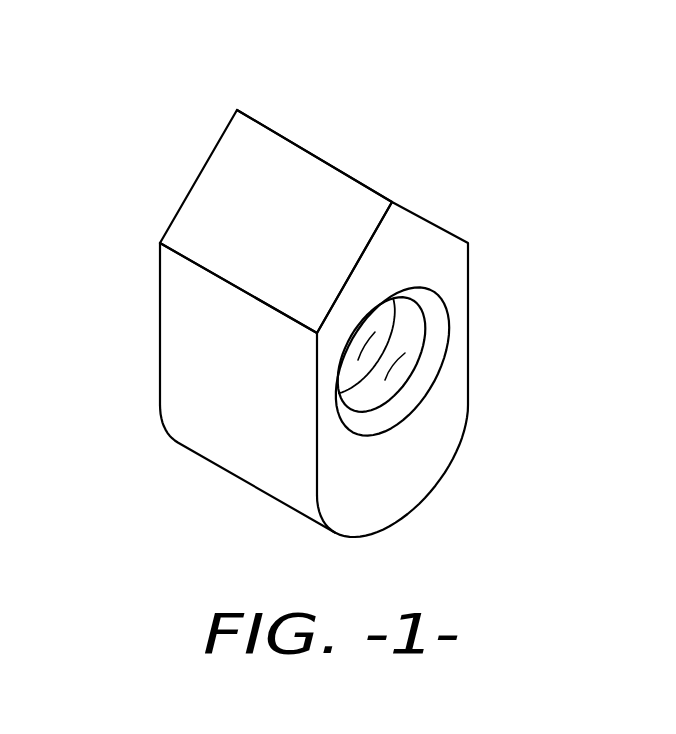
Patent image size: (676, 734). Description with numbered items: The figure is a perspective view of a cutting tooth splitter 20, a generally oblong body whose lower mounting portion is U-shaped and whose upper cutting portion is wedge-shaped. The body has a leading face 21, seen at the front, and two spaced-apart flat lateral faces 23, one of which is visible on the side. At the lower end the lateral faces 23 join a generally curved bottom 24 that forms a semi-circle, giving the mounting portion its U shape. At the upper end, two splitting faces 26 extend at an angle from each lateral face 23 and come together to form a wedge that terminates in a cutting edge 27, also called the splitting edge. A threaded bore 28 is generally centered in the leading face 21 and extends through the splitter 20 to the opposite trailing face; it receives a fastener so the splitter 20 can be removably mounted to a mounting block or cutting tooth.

The splitter 20 is at (287, 285).
The leading face 21 is at (413, 255).
The lateral face 23 is at (258, 395).
The curved bottom 24 is at (247, 471).
The splitting face 26 is at (289, 242).
The cutting edge 27 is at (283, 137).
The threaded bore 28 is at (388, 357).